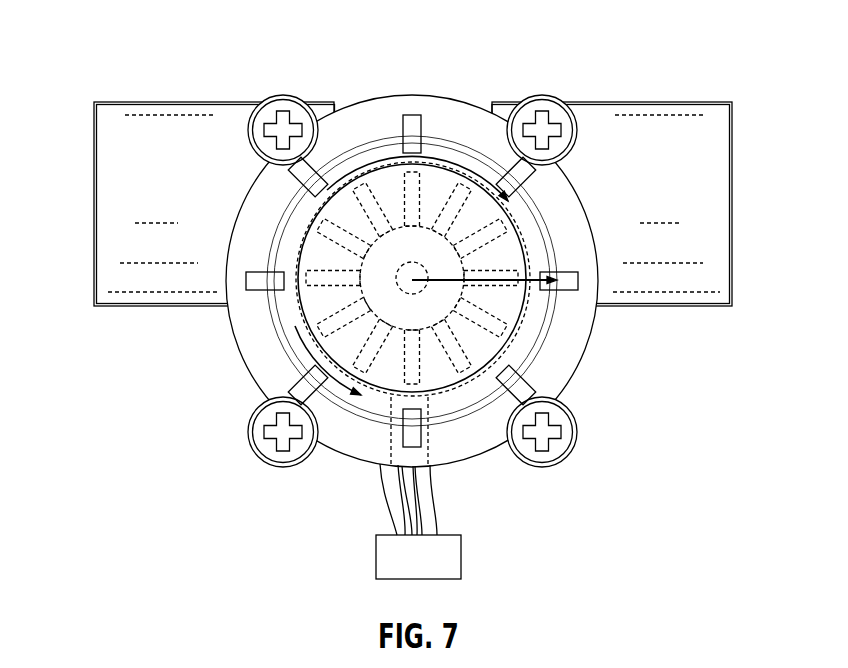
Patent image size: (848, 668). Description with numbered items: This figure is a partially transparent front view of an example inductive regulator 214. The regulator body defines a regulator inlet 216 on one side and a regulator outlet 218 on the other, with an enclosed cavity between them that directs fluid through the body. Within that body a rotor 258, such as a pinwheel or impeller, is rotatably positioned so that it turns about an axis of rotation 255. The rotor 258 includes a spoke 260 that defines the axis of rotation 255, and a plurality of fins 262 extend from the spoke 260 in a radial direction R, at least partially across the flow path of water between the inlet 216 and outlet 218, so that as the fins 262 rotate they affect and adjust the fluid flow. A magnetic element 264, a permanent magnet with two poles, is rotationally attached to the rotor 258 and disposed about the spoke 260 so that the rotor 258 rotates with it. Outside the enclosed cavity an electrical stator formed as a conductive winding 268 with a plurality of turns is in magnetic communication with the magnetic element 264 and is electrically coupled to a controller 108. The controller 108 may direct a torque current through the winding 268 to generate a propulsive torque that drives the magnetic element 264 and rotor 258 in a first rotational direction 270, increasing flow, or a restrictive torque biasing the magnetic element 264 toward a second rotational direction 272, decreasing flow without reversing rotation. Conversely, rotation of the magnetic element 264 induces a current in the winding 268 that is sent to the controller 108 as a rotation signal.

The inductive regulator 214 is at (578, 76).
The regulator inlet 216 is at (76, 255).
The regulator outlet 218 is at (742, 247).
The axis of rotation 255 is at (407, 287).
The rotor 258 is at (387, 186).
The spoke 260 is at (424, 292).
The fins 262 is at (337, 315).
The magnetic element 264 is at (378, 234).
The conductive winding 268 is at (508, 304).
The first rotational direction 270 is at (466, 168).
The second rotational direction 272 is at (293, 357).
The radial direction R is at (512, 288).
The controller 108 is at (432, 571).